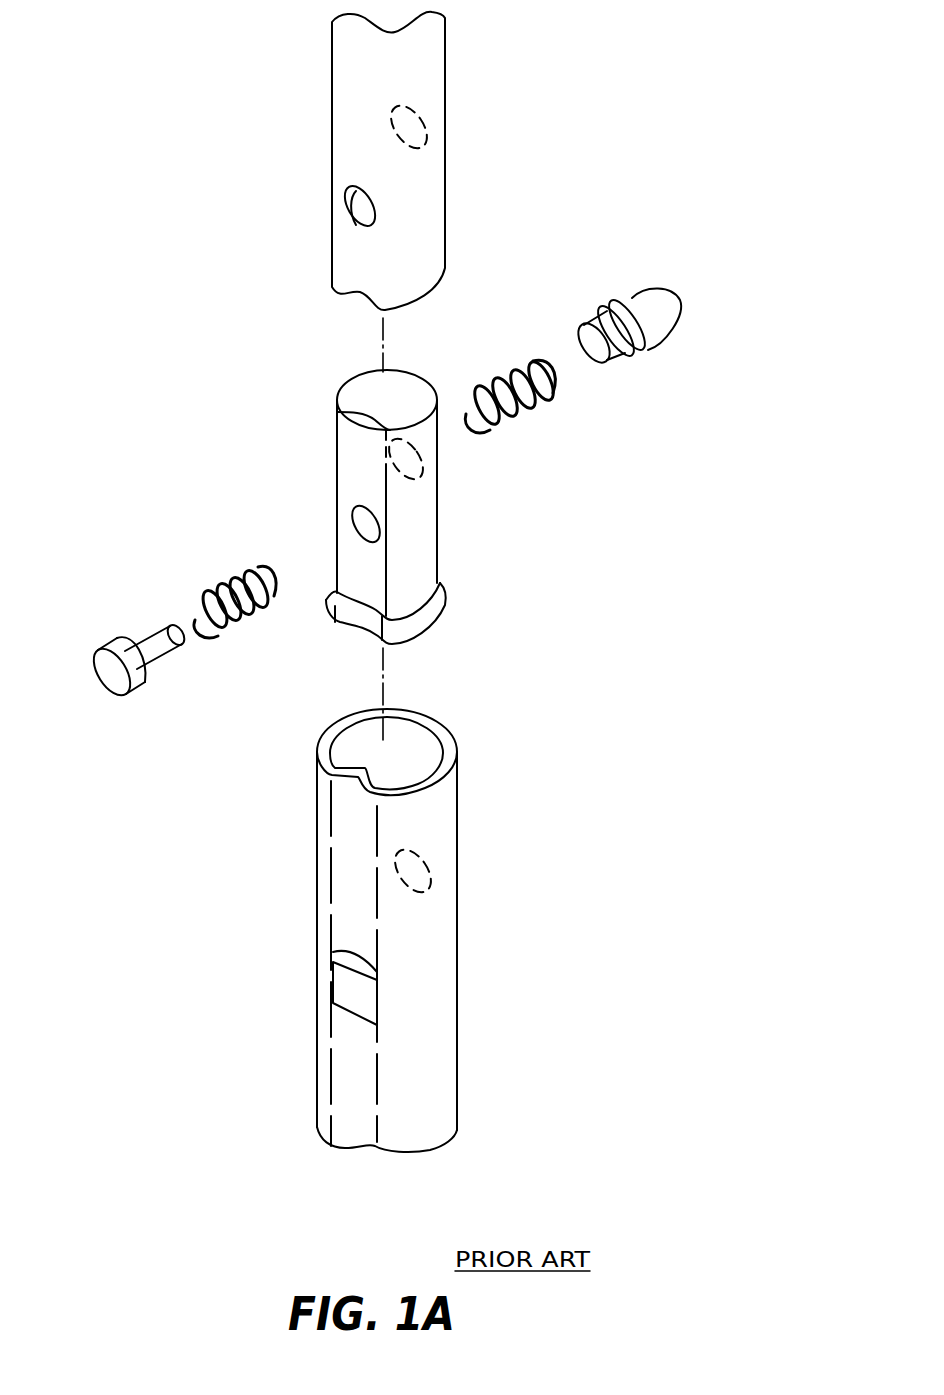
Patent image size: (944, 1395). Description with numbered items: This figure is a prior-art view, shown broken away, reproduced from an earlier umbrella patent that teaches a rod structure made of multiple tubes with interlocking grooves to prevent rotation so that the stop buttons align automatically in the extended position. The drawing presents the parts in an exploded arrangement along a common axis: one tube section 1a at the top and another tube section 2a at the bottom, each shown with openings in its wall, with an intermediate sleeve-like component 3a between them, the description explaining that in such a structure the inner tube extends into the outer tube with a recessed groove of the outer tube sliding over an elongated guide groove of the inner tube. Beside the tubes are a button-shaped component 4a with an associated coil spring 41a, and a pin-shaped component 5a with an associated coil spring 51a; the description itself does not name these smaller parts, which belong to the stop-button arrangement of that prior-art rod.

The upper tube section 1a is at (445, 207).
The lower tube section 2a is at (457, 972).
The connecting insert 3a is at (440, 547).
The push button 4a is at (652, 347).
The spring for push button 41a is at (528, 408).
The locking pin 5a is at (120, 650).
The spring for locking pin 51a is at (233, 585).